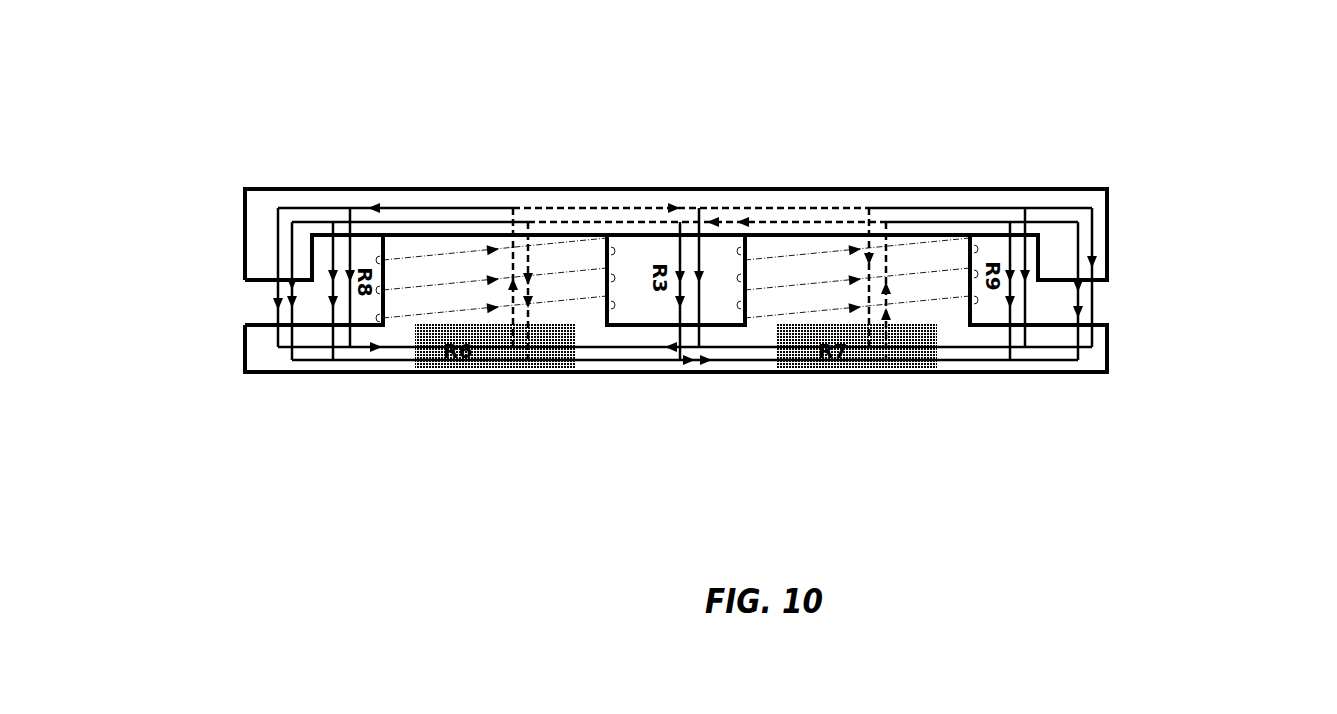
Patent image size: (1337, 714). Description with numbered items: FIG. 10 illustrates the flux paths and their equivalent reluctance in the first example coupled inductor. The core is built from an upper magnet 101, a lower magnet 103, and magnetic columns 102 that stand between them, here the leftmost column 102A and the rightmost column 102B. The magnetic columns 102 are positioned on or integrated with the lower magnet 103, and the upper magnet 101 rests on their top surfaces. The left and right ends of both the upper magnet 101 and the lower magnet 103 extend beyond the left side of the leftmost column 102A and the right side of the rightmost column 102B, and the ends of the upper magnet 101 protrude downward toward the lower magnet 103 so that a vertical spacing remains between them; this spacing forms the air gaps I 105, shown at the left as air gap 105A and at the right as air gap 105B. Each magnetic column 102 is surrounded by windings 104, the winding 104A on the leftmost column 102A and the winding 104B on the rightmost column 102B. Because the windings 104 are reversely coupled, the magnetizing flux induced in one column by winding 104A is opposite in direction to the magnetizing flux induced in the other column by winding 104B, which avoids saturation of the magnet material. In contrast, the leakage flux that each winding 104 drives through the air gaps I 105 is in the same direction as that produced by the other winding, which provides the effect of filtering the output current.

The upper magnet 101 is at (582, 189).
The magnetic columns 102 is at (495, 185).
The leftmost column 102A is at (428, 295).
The rightmost column 102B is at (795, 270).
The lower magnet 103 is at (722, 337).
The windings 104 is at (672, 359).
The winding 104A is at (572, 285).
The winding 104B is at (945, 290).
The air gaps I 105 is at (205, 197).
The air gap I 105A is at (308, 298).
The air gap I 105B is at (1048, 298).